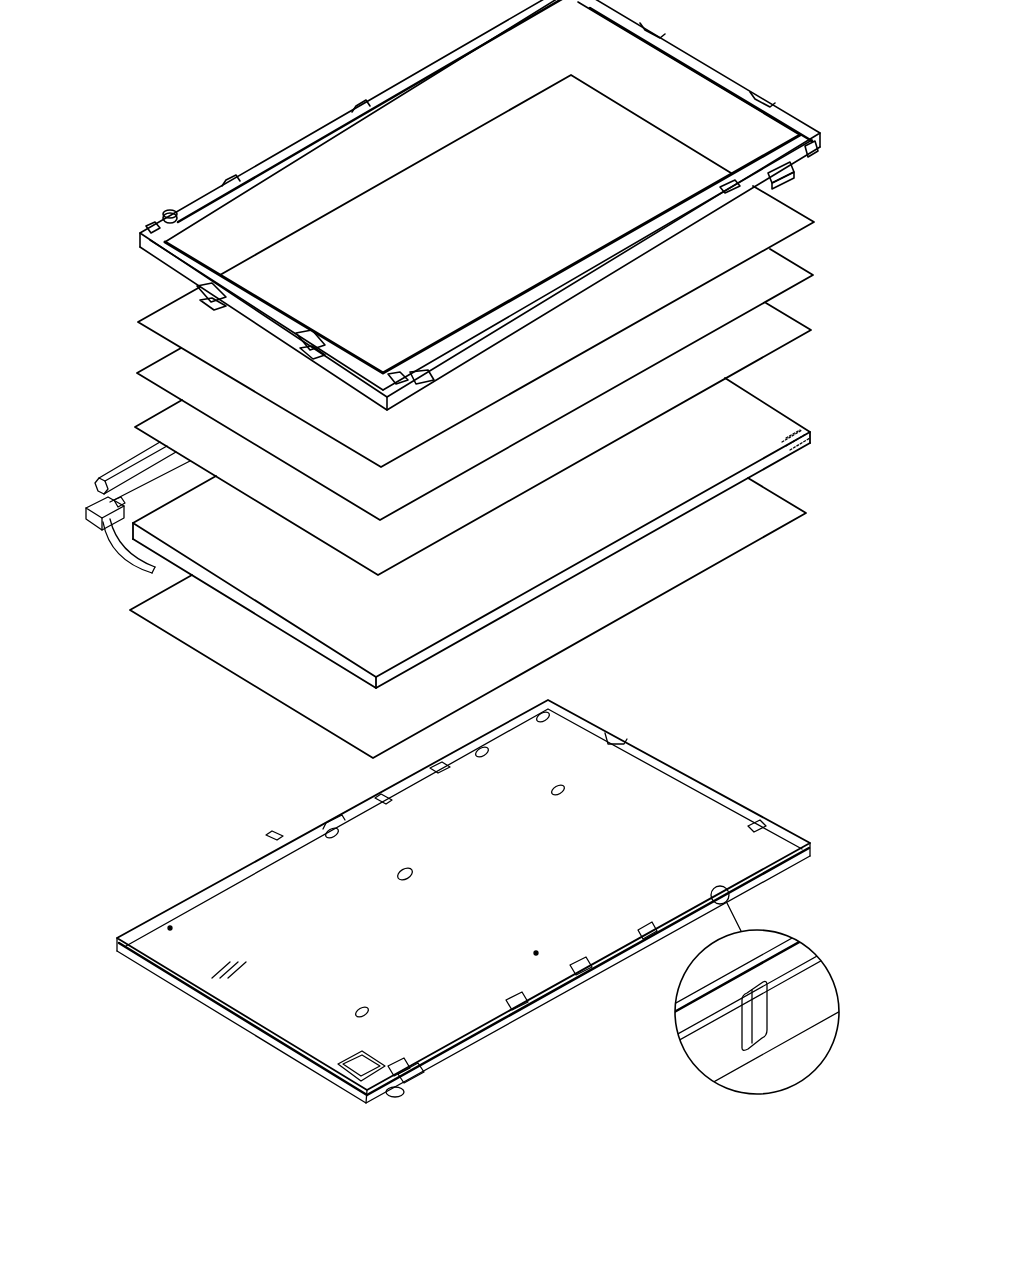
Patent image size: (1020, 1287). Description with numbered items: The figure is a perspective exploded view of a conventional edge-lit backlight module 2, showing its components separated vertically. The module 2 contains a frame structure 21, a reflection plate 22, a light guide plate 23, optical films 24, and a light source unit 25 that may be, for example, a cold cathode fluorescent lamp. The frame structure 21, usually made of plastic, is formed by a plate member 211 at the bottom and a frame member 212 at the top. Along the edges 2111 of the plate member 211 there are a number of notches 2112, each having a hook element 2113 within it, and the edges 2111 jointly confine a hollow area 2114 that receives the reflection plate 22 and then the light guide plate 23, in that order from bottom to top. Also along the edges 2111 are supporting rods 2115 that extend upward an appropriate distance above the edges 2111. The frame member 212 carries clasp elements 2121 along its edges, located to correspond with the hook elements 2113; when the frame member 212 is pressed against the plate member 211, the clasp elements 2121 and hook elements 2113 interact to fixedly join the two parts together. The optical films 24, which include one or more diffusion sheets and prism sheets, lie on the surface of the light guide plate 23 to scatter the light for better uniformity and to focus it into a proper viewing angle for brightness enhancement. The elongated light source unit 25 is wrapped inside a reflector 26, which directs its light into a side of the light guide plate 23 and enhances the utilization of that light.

The backlight module 2 is at (196, 86).
The frame structure 21 is at (151, 205).
The plate member 211 is at (505, 1025).
The frame member 212 is at (313, 140).
The edges 2111 is at (553, 993).
The notches 2112 is at (415, 1075).
The hook element 2113 is at (403, 1085).
The hollow area 2114 is at (704, 810).
The supporting rods 2115 is at (765, 1020).
The clasp elements 2121 is at (786, 181).
The reflection plate 22 is at (648, 593).
The light guide plate 23 is at (682, 494).
The optical films 24 is at (128, 326).
The light source unit 25 is at (110, 528).
The reflector 26 is at (120, 468).